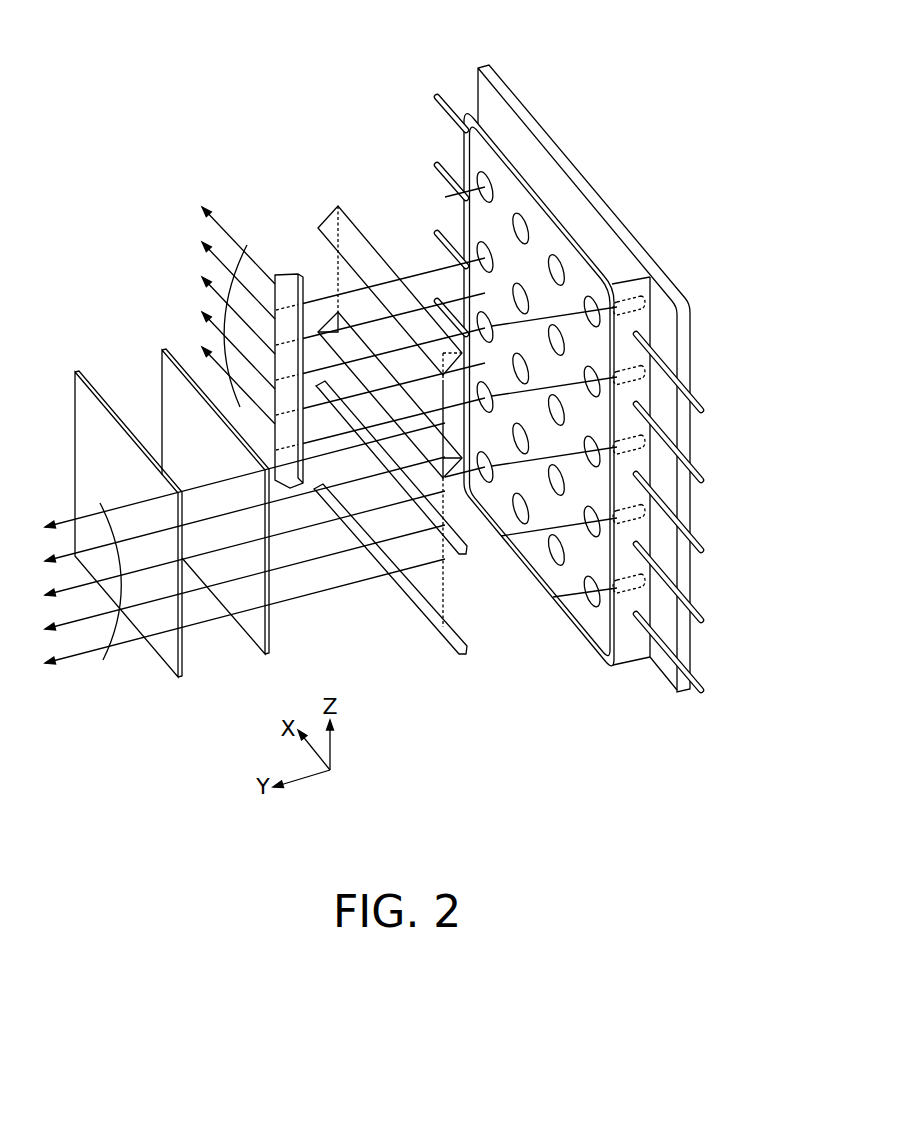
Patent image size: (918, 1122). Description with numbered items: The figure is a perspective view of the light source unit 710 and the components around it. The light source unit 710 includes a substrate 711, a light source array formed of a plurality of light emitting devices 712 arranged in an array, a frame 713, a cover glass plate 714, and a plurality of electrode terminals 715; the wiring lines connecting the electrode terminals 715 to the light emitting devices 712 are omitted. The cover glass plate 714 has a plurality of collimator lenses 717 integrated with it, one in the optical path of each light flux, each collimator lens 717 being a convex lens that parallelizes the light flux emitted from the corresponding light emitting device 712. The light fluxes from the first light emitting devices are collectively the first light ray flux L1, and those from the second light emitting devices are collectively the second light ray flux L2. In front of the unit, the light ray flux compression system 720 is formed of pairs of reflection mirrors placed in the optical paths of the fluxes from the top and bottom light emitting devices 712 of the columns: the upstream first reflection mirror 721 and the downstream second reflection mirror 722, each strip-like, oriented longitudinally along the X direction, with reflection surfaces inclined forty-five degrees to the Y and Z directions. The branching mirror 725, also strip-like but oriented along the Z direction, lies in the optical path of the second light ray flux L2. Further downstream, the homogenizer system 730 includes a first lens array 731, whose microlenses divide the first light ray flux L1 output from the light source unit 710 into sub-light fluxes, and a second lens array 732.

The light source unit 710 is at (560, 100).
The substrate 711 is at (658, 312).
The light emitting devices 712 is at (622, 300).
The frame 713 is at (630, 648).
The cover glass plate 714 is at (606, 630).
The electrode terminals 715 is at (438, 94).
The collimator lenses 717 is at (587, 598).
The light ray flux compression system 720 is at (360, 180).
The first reflection mirror 721 is at (342, 215).
The second reflection mirror 722 is at (358, 345).
The branching mirror 725 is at (292, 268).
The homogenizer system 730 is at (48, 288).
The first lens array 731 is at (167, 390).
The second lens array 732 is at (77, 400).
The first light ray flux L1 is at (103, 662).
The second light ray flux L2 is at (247, 245).